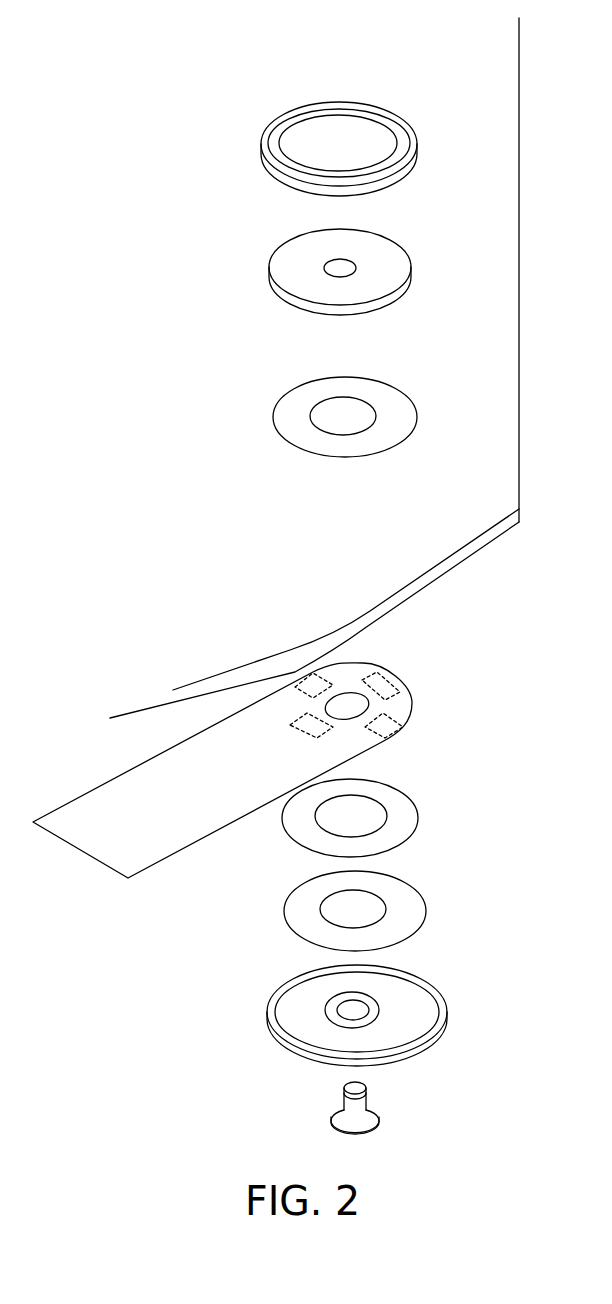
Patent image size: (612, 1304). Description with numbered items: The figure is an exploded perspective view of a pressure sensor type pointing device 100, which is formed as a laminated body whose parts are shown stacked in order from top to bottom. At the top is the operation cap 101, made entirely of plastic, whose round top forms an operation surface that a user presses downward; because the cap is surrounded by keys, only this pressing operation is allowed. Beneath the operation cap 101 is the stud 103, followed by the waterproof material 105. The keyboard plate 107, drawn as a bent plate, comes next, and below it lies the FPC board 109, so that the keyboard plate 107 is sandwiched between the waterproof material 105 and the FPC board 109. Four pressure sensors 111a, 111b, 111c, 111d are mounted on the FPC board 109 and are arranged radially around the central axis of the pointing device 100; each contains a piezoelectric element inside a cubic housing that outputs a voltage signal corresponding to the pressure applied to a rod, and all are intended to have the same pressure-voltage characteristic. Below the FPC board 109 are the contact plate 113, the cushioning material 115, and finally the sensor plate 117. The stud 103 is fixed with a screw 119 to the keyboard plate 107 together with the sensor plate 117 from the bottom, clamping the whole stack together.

The pointing device 100 is at (235, 43).
The operation cap 101 is at (378, 107).
The stud 103 is at (405, 246).
The waterproof material 105 is at (402, 389).
The keyboard plate 107 is at (519, 291).
The FPC board 109 is at (108, 776).
The pressure sensor 111a is at (388, 678).
The pressure sensor 111b is at (311, 672).
The pressure sensor 111c is at (298, 737).
The pressure sensor 111d is at (398, 723).
The contact plate 113 is at (412, 800).
The cushioning material 115 is at (420, 895).
The sensor plate 117 is at (425, 985).
The screw 119 is at (380, 1118).